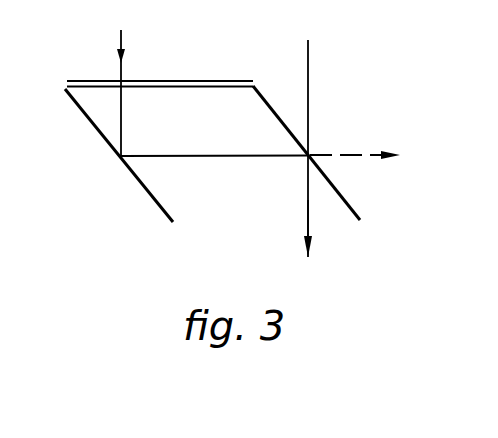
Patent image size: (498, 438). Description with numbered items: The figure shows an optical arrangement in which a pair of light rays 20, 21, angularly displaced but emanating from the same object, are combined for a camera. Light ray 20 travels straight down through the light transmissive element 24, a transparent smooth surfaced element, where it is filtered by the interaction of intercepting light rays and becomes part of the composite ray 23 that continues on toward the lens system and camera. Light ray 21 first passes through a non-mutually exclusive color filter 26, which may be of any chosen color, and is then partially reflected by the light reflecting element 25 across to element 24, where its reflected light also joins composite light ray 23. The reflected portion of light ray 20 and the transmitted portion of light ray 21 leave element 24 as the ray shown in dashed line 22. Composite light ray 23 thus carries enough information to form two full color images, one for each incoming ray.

The light ray 20 is at (308, 68).
The light ray 21 is at (125, 70).
The reflected portion of light ray 20 and transmitted portion of light ray 21 22 is at (356, 151).
The composite light ray 23 is at (308, 218).
The light transmissive element 24 is at (360, 210).
The light reflecting element 25 is at (150, 195).
The non-mutually exclusive color filter 26 is at (232, 79).